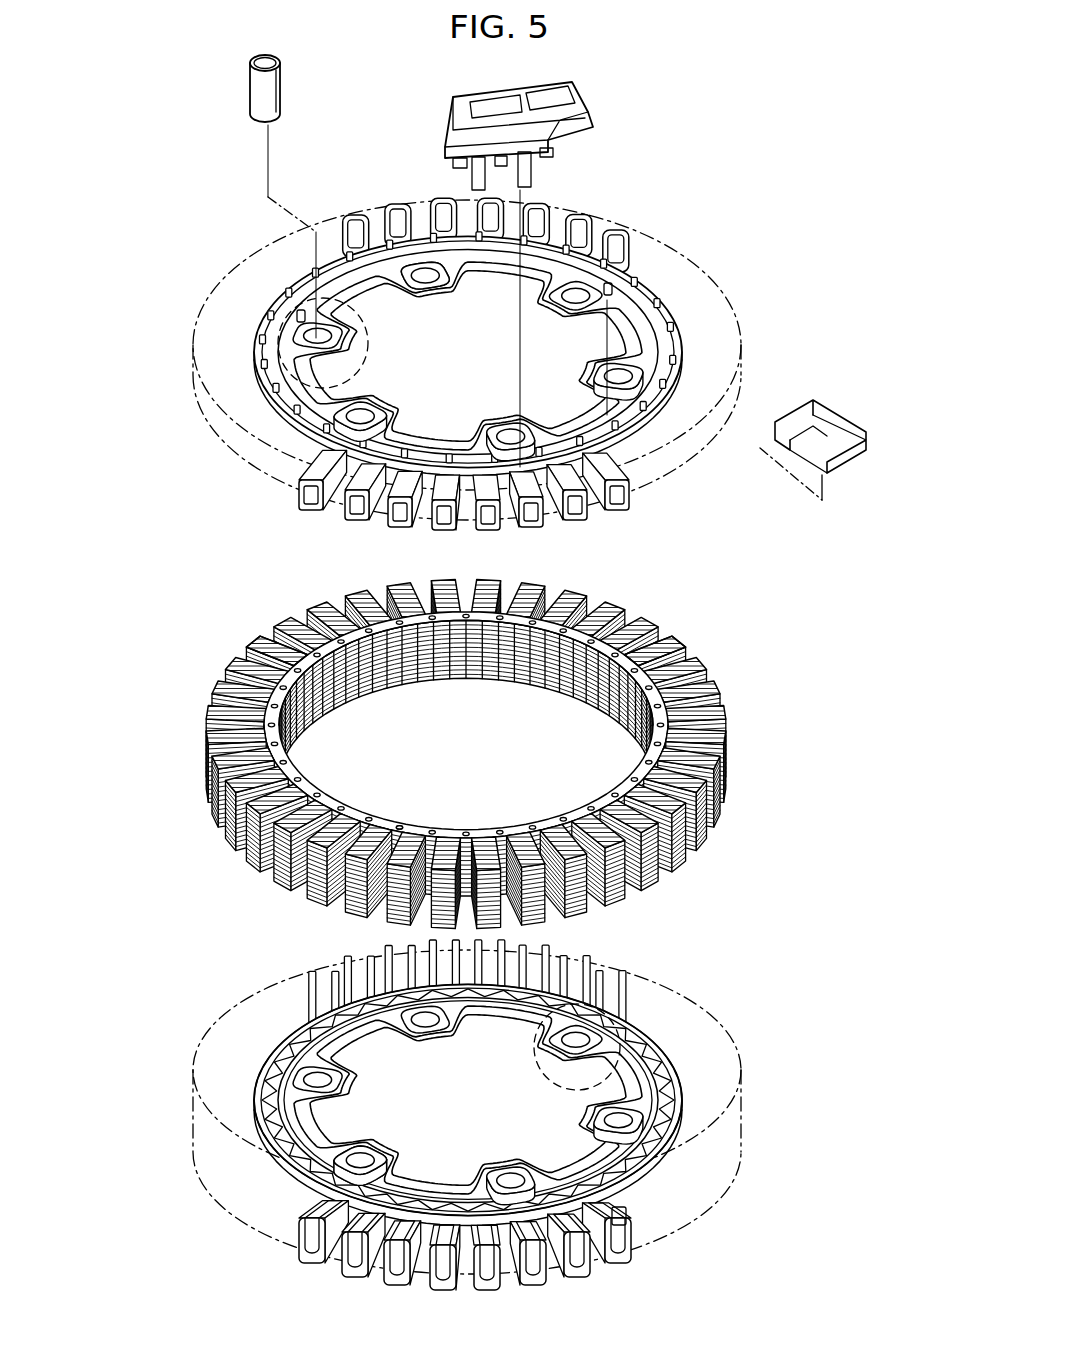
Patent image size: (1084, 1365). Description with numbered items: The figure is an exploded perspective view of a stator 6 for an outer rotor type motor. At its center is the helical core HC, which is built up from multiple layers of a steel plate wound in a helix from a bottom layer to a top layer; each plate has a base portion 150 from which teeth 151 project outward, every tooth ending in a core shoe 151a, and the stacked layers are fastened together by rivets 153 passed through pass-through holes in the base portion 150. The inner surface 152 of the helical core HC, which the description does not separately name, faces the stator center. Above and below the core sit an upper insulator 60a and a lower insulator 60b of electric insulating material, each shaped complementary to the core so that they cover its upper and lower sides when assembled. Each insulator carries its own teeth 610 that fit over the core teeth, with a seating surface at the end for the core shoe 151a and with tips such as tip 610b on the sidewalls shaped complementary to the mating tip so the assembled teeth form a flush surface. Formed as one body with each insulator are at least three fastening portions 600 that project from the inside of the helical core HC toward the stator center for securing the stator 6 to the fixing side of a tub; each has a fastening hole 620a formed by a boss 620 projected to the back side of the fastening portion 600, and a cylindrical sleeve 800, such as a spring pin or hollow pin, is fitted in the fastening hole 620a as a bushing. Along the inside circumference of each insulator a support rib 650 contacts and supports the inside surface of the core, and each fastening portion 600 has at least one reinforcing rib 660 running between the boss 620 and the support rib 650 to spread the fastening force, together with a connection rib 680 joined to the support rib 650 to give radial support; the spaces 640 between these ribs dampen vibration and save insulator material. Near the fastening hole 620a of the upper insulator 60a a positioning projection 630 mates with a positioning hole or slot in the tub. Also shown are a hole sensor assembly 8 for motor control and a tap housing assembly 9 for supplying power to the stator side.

The stator 6 is at (166, 170).
The cylindrical sleeve 800 is at (284, 93).
The hole sensor assembly 8 is at (602, 117).
The tap housing assembly 9 is at (830, 422).
The upper insulator 60a is at (735, 262).
The positioning projection 630 is at (608, 283).
The fastening hole 620a is at (447, 300).
The fastening portion 600 is at (376, 362).
The helical core HC is at (738, 692).
The base portion 150 is at (530, 821).
The teeth 151 is at (262, 633).
The core shoe 151a is at (682, 645).
The core inner surface 152 is at (354, 710).
The rivets 153 is at (413, 827).
The lower insulator 60b is at (700, 990).
The spaces 640 is at (340, 976).
The support rib 650 is at (660, 1037).
The reinforcing rib 660 is at (330, 1143).
The boss 620 is at (355, 1160).
The connection rib 680 is at (420, 1200).
The tip 610b is at (623, 1223).
The teeth 610 is at (592, 1278).